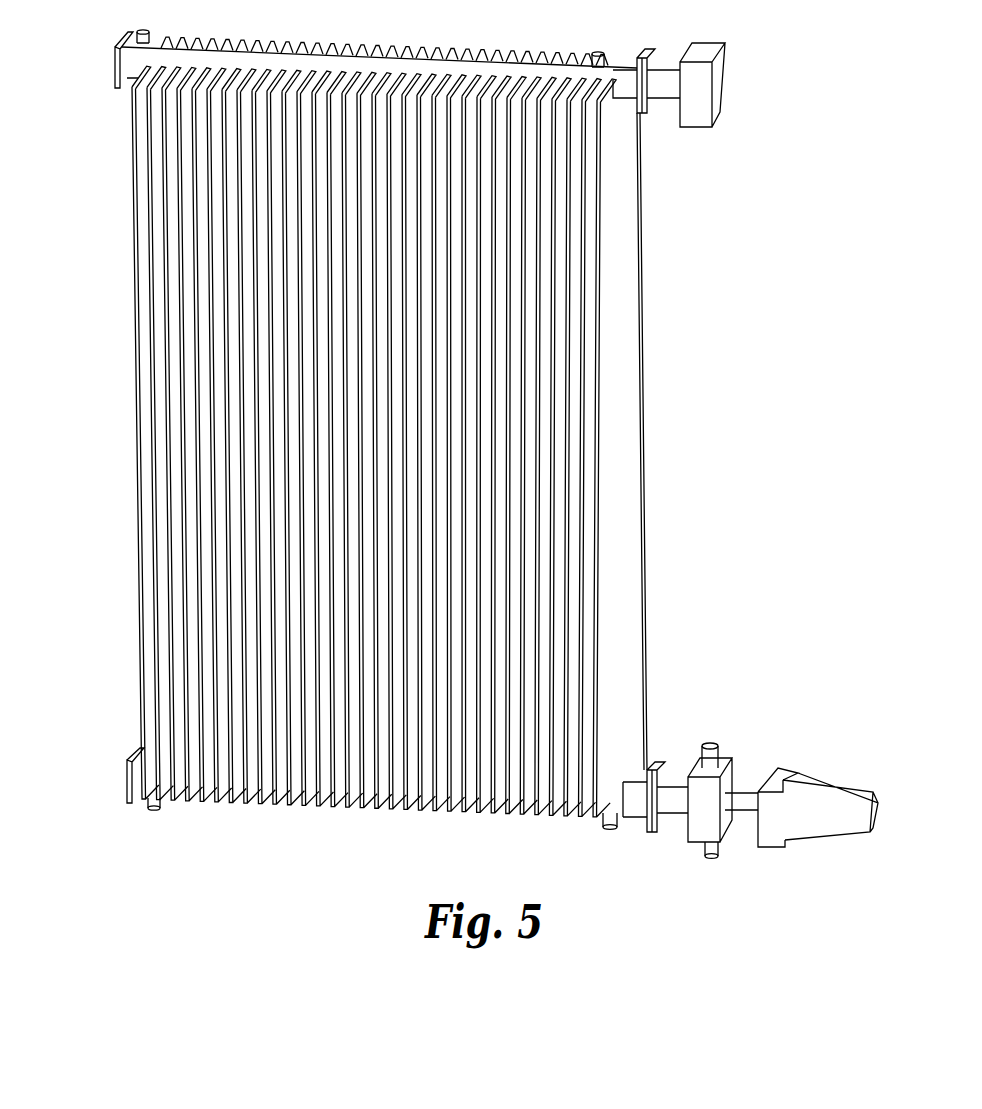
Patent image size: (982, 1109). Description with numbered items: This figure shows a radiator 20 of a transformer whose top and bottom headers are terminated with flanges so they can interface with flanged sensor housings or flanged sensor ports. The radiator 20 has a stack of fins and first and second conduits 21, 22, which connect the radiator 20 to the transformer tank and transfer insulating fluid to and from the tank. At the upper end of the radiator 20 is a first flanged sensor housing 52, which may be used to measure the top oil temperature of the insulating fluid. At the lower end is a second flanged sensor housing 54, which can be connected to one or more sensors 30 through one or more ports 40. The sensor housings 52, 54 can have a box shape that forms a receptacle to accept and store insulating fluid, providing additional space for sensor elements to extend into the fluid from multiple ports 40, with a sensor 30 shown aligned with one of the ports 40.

The radiator 20 is at (288, 355).
The first conduit 21 is at (121, 73).
The second conduit 22 is at (133, 788).
The sensor 30 is at (837, 792).
The port 40 is at (717, 749).
The first flanged sensor housing 52 is at (697, 100).
The second flanged sensor housing 54 is at (702, 813).